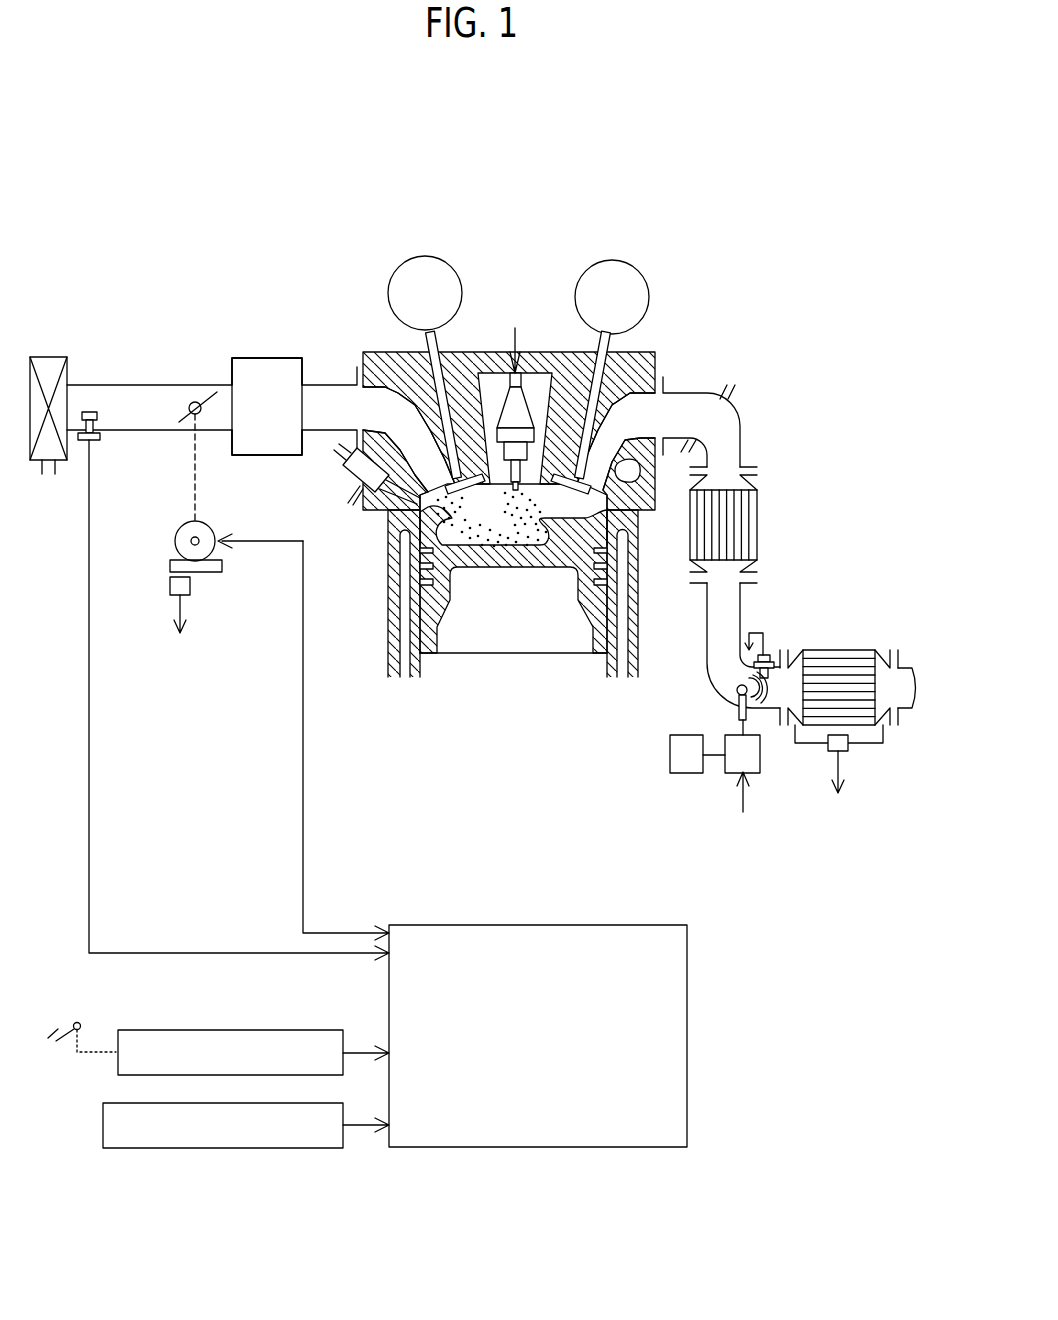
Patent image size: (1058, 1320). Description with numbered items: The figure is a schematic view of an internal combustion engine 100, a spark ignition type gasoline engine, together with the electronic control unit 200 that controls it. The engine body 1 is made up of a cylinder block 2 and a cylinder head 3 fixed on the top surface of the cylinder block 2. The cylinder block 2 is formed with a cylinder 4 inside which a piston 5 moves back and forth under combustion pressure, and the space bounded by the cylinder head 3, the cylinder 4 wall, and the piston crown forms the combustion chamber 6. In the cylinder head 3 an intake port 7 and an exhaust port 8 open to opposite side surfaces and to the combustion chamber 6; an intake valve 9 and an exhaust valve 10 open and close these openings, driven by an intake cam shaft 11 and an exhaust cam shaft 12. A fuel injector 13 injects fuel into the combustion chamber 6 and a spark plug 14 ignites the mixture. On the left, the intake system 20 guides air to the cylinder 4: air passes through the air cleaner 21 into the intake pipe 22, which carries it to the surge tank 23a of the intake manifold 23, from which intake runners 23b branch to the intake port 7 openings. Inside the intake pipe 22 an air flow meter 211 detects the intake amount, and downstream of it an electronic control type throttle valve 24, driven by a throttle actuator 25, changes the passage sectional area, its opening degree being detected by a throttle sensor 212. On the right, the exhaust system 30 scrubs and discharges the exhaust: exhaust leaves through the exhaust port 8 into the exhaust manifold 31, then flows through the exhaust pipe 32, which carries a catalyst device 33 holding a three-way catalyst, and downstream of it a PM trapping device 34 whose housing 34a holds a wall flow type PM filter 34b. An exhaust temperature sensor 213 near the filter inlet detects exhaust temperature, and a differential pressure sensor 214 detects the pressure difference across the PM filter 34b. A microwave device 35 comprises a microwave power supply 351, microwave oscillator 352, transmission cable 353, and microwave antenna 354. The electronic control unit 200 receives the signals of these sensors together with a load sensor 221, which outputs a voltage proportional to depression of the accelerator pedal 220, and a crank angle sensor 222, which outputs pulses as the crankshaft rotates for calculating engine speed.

The internal combustion engine 100 is at (392, 227).
The engine body 1 is at (379, 617).
The cylinder block 2 is at (634, 597).
The cylinder head 3 is at (365, 512).
The cylinder 4 is at (427, 528).
The piston 5 is at (443, 597).
The combustion chamber 6 is at (572, 500).
The intake port 7 is at (396, 408).
The exhaust port 8 is at (655, 417).
The intake valve 9 is at (446, 392).
The exhaust valve 10 is at (596, 360).
The intake cam shaft 11 is at (422, 257).
The exhaust cam shaft 12 is at (634, 268).
The fuel injector 13 is at (355, 478).
The spark plug 14 is at (518, 407).
The intake system 20 is at (182, 332).
The air cleaner 21 is at (47, 355).
The intake pipe 22 is at (131, 433).
The intake manifold 23 is at (347, 281).
The surge tank 23a is at (258, 357).
The intake runner 23b is at (328, 385).
The throttle valve 24 is at (215, 413).
The throttle actuator 25 is at (175, 538).
The air flow meter 211 is at (88, 410).
The throttle sensor 212 is at (191, 585).
The exhaust system 30 is at (773, 390).
The exhaust manifold 31 is at (714, 392).
The exhaust pipe 32 is at (741, 457).
The catalyst device 33 is at (758, 508).
The PM trapping device 34 is at (905, 596).
The housing 34a is at (797, 650).
The PM filter 34b is at (882, 650).
The exhaust temperature sensor 213 is at (773, 653).
The differential pressure sensor 214 is at (850, 751).
The microwave device 35 is at (651, 717).
The microwave power supply 351 is at (690, 777).
The microwave oscillator 352 is at (763, 767).
The transmission cable 353 is at (741, 727).
The microwave antenna 354 is at (736, 690).
The electronic control unit 200 is at (688, 945).
The accelerator pedal 220 is at (62, 1049).
The load sensor 221 is at (248, 1030).
The crank angle sensor 222 is at (185, 1149).